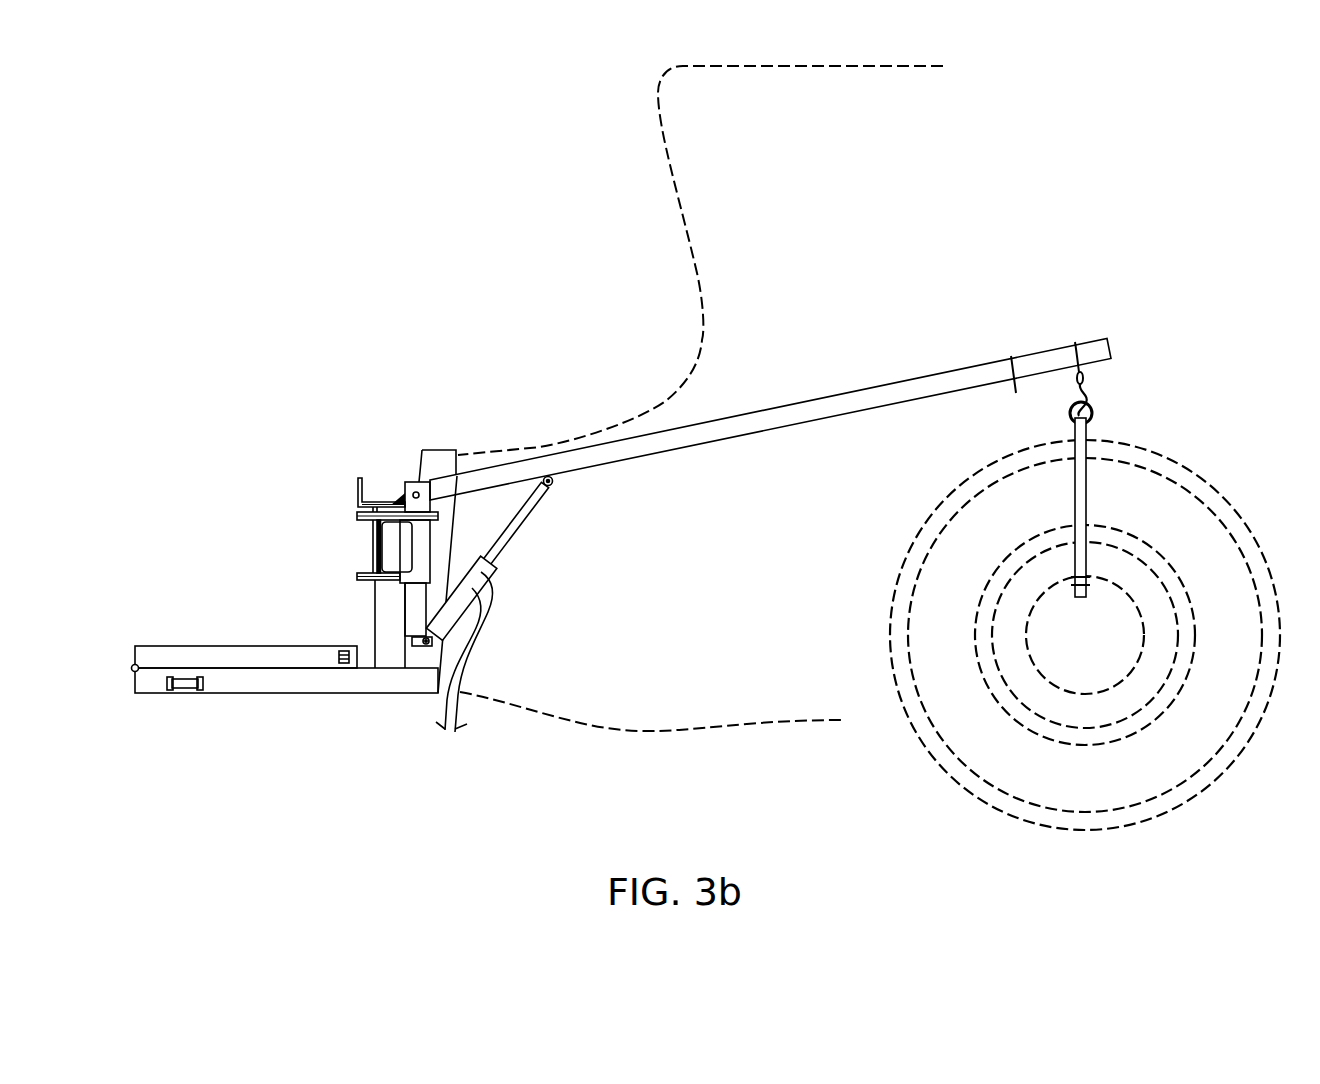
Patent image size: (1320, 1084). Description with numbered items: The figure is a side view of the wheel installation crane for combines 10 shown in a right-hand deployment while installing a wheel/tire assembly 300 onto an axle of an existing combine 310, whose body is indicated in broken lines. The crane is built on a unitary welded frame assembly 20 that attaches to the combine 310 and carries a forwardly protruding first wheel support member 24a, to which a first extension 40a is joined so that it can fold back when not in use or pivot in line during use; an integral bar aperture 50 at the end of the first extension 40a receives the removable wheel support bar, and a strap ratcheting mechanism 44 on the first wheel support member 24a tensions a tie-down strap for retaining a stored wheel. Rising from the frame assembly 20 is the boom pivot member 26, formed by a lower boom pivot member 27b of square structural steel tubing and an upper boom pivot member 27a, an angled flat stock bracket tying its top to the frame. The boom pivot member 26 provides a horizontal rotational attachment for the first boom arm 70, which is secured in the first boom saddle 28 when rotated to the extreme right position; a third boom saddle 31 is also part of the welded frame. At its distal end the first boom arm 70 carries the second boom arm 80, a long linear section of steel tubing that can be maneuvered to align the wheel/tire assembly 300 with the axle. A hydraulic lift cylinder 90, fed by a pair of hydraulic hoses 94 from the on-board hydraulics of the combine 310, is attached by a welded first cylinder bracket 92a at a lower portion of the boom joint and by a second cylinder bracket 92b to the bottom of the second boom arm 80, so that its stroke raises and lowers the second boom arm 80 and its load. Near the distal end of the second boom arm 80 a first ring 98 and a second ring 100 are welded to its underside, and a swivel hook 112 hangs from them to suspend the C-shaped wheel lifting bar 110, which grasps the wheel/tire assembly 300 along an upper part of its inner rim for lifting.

The wheel installation crane for combines 10 is at (1106, 122).
The frame assembly 20 is at (441, 442).
The first wheel support member 24a is at (150, 690).
The boom pivot member 26 is at (350, 594).
The upper boom pivot member 27a is at (418, 470).
The lower boom pivot member 27b is at (381, 625).
The first boom saddle 28 is at (358, 575).
The third boom saddle 31 is at (358, 497).
The first extension 40a is at (176, 655).
The strap ratcheting mechanism 44 is at (184, 690).
The integral bar aperture 50 is at (340, 668).
The first boom arm 70 is at (398, 556).
The second boom arm 80 is at (874, 395).
The hydraulic lift cylinder 90 is at (471, 584).
The first cylinder bracket 92a is at (430, 643).
The second cylinder bracket 92b is at (553, 484).
The hydraulic hoses 94 is at (440, 722).
The first ring 98 is at (1011, 357).
The second ring 100 is at (1076, 345).
The wheel lifting bar 110 is at (1087, 520).
The swivel hook 112 is at (1087, 398).
The wheel/tire assembly 300 is at (926, 742).
The combine 310 is at (687, 222).